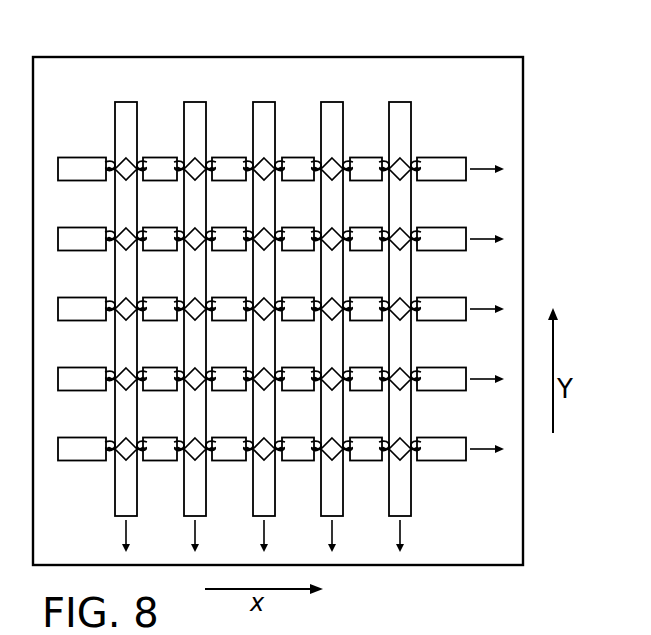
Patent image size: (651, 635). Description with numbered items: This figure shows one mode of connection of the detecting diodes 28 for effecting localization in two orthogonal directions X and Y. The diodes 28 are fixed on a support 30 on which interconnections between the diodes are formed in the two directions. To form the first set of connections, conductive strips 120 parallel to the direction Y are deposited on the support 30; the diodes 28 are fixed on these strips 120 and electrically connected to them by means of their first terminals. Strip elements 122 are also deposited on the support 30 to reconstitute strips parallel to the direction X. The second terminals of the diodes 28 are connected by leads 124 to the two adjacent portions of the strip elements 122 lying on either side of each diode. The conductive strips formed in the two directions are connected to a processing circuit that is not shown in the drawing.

The support 30 is at (505, 547).
The conductive strip 120 is at (397, 110).
The strip element 122 is at (302, 182).
The lead 124 is at (413, 163).
The diode 28 is at (398, 461).